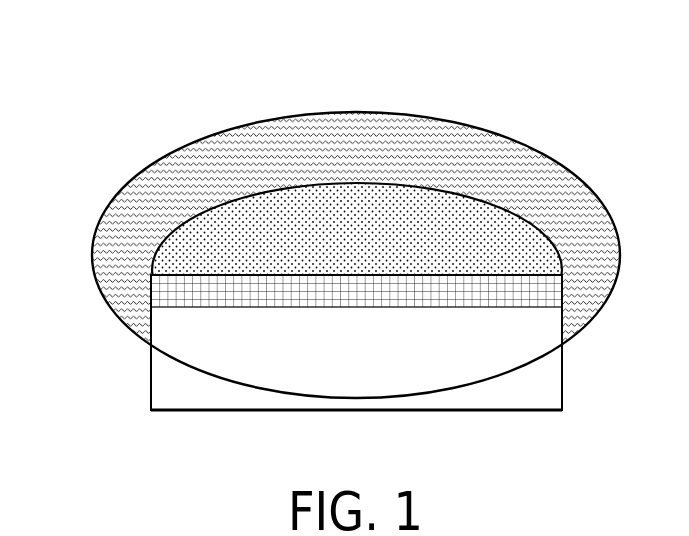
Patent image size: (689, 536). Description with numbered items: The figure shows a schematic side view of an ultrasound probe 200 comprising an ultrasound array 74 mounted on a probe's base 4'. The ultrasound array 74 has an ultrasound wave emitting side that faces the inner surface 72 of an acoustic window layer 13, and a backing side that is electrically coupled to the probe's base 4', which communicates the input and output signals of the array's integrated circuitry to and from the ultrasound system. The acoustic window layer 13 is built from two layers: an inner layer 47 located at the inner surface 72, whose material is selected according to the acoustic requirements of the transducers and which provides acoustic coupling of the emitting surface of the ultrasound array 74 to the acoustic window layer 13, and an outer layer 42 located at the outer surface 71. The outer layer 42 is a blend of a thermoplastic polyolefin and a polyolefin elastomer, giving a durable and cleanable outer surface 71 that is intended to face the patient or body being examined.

The ultrasound probe 200 is at (343, 215).
The acoustic window layer 13 is at (373, 231).
The outer surface 71 is at (373, 257).
The outer layer 42 is at (369, 160).
The inner layer 47 is at (369, 251).
The inner surface 72 is at (530, 272).
The ultrasound array 74 is at (227, 298).
The probe's base 4' is at (330, 342).